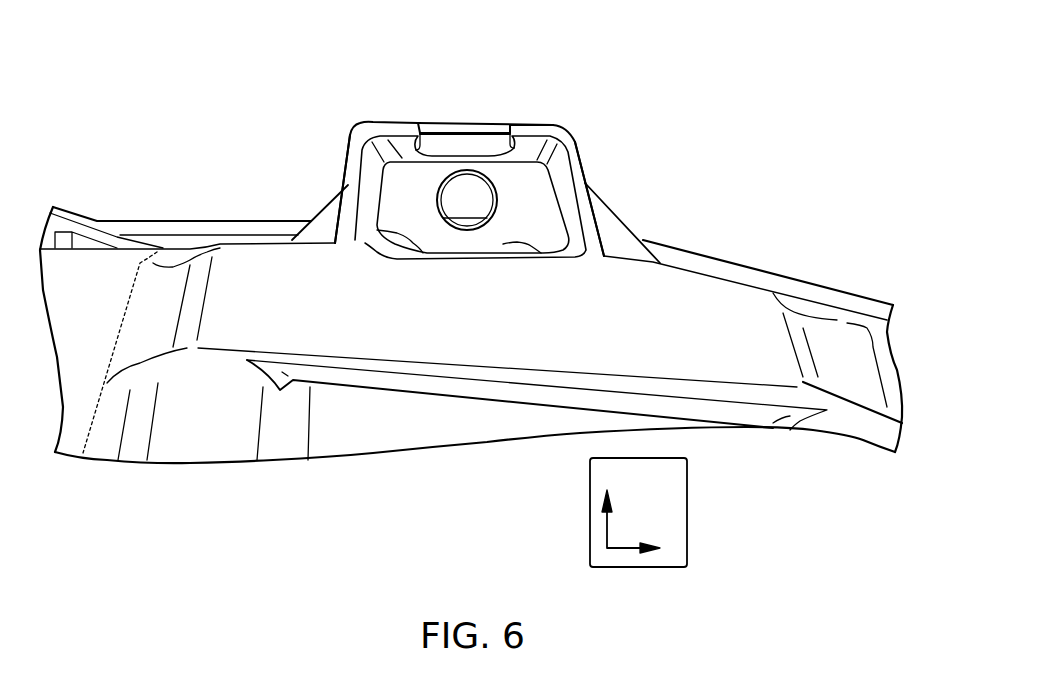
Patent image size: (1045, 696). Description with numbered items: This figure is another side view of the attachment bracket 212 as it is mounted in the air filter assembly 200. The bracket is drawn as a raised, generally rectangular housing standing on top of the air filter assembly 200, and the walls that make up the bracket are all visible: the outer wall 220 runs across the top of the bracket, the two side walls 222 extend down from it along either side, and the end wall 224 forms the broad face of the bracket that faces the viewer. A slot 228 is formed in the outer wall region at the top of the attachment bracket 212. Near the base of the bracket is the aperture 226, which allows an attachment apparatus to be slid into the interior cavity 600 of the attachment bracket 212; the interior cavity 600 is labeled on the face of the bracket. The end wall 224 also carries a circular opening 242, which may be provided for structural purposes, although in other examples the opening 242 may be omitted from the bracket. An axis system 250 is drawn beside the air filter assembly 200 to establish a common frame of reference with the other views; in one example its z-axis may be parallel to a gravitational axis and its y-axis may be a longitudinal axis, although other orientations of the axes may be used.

The air filter assembly 200 is at (748, 157).
The attachment bracket 212 is at (467, 165).
The outer wall 220 is at (523, 132).
The side walls 222 is at (355, 173).
The end wall 224 is at (522, 207).
The aperture 226 is at (430, 225).
The slot 228 is at (452, 133).
The opening 242 is at (470, 196).
The axis system 250 is at (590, 522).
The interior cavity 600 is at (426, 199).